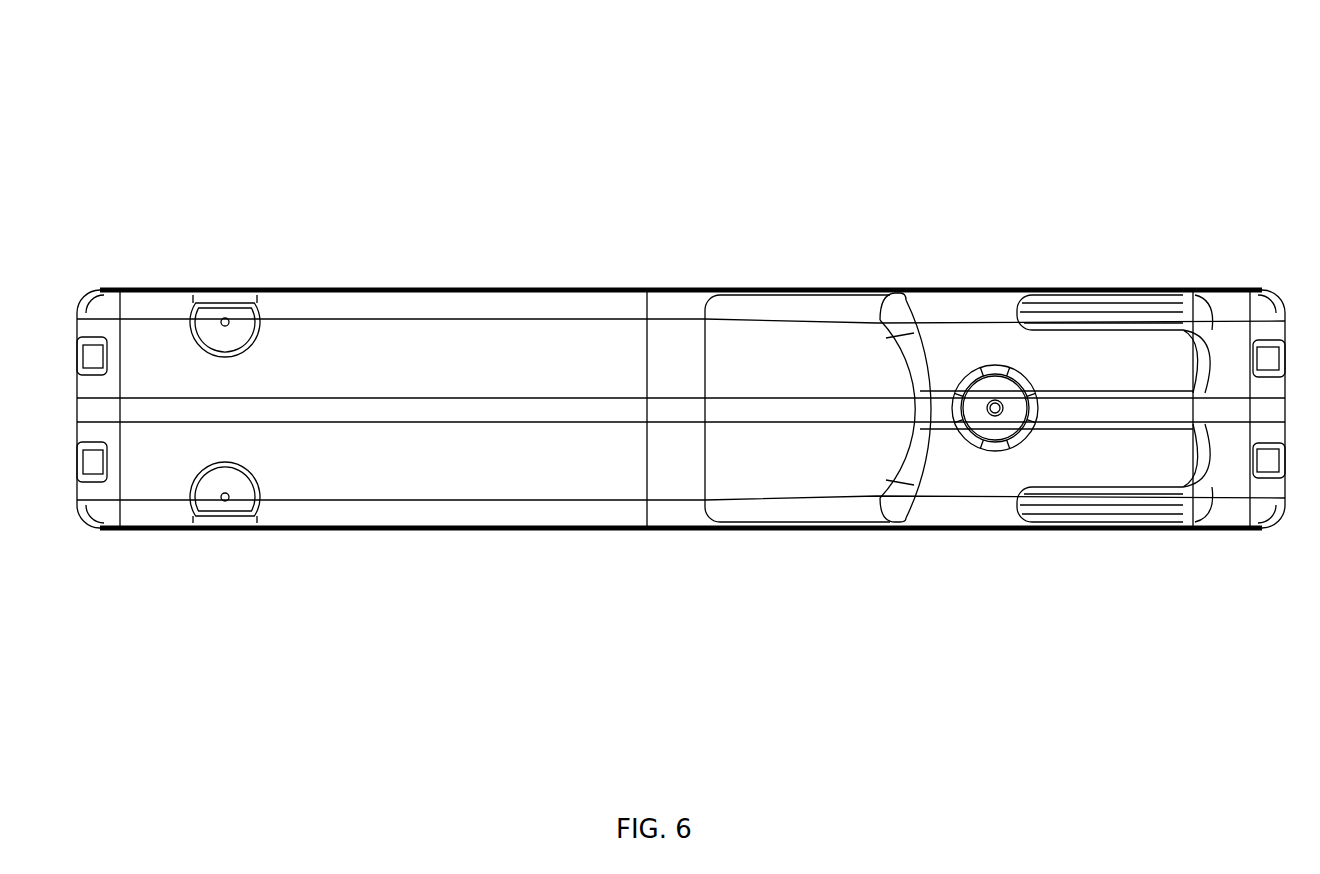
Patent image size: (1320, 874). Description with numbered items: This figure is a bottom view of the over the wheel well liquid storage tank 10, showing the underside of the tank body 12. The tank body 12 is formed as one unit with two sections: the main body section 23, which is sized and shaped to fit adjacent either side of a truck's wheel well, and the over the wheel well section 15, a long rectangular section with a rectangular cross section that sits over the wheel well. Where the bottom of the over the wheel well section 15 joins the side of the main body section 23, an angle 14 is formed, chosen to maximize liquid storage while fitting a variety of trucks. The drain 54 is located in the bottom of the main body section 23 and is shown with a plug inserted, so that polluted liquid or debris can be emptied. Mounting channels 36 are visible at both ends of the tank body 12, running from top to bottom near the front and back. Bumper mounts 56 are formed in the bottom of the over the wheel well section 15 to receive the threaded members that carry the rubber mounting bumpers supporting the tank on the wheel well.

The over the wheel well liquid storage tank 10 is at (681, 365).
The tank body 12 is at (502, 510).
The angle 14 is at (903, 503).
The over the wheel well section 15 is at (385, 517).
The main body section 23 is at (1000, 307).
The mounting channels 36 is at (92, 355).
The drain 54 is at (1002, 427).
The bumper mount 56 is at (242, 325).